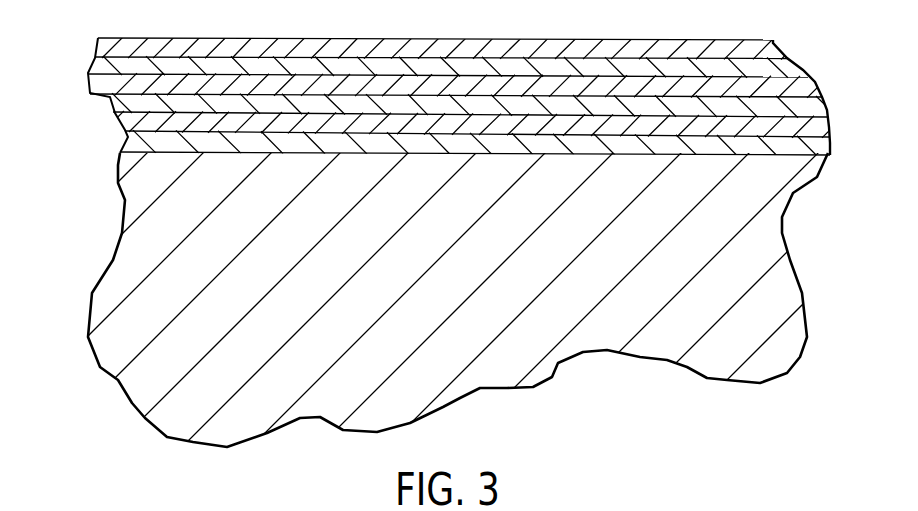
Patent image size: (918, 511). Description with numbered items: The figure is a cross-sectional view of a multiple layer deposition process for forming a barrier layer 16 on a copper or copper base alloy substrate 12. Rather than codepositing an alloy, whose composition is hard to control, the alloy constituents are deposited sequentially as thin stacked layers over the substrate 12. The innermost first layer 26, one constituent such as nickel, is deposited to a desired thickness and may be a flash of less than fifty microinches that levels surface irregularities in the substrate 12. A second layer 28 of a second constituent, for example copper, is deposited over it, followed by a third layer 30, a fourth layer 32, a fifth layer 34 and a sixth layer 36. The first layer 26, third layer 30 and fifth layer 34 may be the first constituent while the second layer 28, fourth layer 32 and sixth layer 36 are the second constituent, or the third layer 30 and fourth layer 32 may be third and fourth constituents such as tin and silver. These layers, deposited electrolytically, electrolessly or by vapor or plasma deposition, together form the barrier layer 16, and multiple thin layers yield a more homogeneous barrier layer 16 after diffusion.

The substrate 12 is at (805, 322).
The barrier layer 16 is at (460, 102).
The first layer 26 is at (824, 143).
The second layer 28 is at (818, 122).
The third layer 30 is at (818, 108).
The fourth layer 32 is at (808, 93).
The fifth layer 34 is at (791, 72).
The sixth layer 36 is at (774, 43).